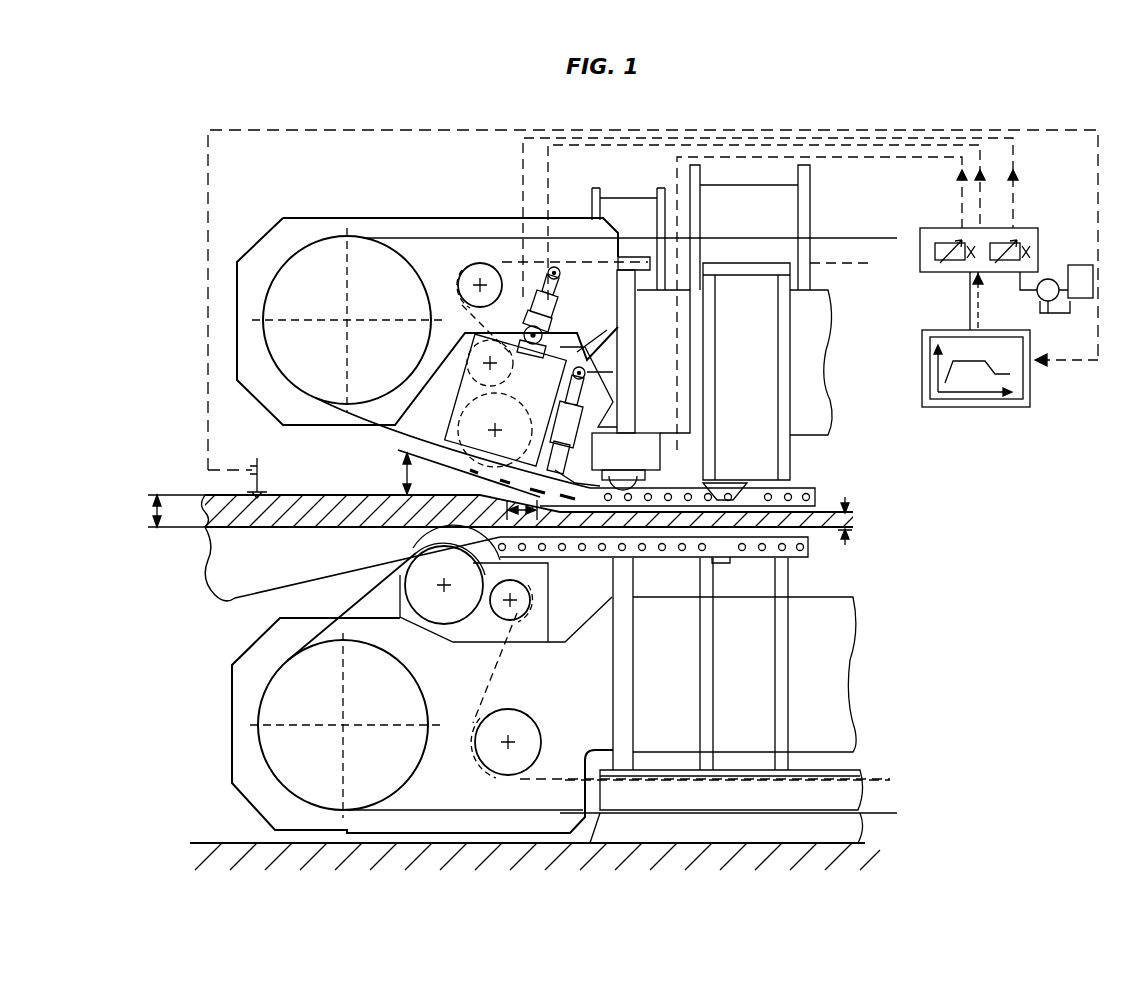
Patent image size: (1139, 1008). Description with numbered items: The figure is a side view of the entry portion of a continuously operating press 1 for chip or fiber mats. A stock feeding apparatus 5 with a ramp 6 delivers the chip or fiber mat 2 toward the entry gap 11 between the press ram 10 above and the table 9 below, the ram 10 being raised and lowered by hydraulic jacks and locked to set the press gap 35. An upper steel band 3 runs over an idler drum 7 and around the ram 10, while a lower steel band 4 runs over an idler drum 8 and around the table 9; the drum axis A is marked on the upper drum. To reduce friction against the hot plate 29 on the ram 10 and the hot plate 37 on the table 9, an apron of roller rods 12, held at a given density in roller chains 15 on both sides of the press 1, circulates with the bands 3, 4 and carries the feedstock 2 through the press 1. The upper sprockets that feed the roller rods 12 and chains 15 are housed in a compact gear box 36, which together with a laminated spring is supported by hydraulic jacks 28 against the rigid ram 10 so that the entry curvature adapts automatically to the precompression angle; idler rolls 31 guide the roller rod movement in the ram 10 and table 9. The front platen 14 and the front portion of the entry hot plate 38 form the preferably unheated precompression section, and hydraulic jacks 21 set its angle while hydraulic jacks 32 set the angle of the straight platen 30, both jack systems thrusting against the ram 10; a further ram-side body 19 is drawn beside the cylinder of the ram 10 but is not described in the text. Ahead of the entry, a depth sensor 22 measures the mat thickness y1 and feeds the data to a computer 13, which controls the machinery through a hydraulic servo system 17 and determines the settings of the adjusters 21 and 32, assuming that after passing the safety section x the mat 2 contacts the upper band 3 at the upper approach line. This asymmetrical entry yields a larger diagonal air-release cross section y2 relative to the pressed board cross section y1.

The continuously operating press 1 is at (192, 405).
The chip or fiber mat 2 is at (198, 542).
The upper steel band 3 is at (415, 237).
The lower steel band 4 is at (425, 812).
The stock feeding apparatus 5 is at (352, 564).
The ramp 6 is at (398, 550).
The upper idler drum 7 is at (347, 320).
The lower idler drum 8 is at (345, 725).
The table 9 is at (728, 700).
The press ram 10 is at (750, 332).
The entry gap 11 is at (453, 448).
The roller rods 12 is at (812, 549).
The computer 13 is at (1030, 375).
The front platen 14 is at (577, 468).
The roller chains 15 is at (505, 262).
The hydraulic servo system 17 is at (1045, 270).
The press platen body 19 is at (785, 365).
The hydraulic jacks 21 is at (583, 390).
The depth sensor 22 is at (268, 475).
The hydraulic jacks 28 is at (560, 290).
The hot plate 29 is at (812, 497).
The platen 30 is at (650, 490).
The idler rolls 31 is at (472, 272).
The hydraulic jacks 32 is at (633, 447).
The press gap 35 is at (855, 521).
The gear box 36 is at (506, 400).
The hot plate 37 is at (830, 560).
The entry hot plate 38 is at (590, 558).
The drum axis A is at (350, 320).
The safety margin x is at (476, 489).
The depth of the chip or fiber mat y1 is at (161, 511).
The diagonal air-release cross section y2 is at (390, 473).